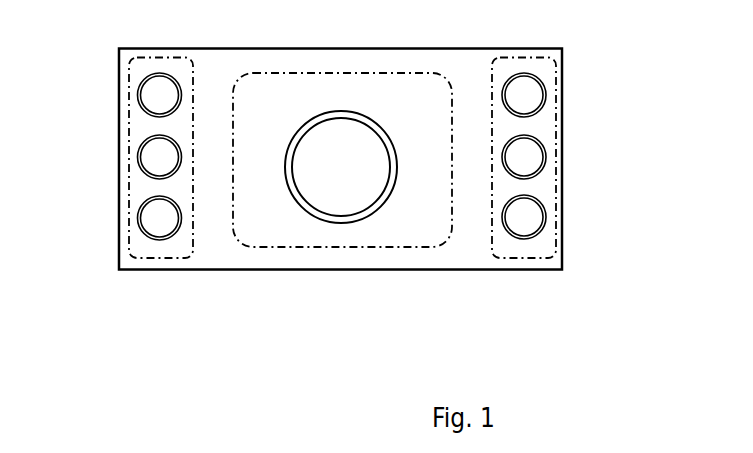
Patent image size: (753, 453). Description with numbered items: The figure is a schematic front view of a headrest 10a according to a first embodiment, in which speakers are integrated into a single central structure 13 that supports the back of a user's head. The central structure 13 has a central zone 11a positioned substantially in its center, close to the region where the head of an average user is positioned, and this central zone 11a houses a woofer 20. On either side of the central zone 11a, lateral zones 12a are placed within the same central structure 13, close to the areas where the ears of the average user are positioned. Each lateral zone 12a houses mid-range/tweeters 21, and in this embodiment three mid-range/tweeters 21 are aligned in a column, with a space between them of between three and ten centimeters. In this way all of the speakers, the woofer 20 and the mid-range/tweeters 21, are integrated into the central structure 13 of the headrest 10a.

The headrest 10a is at (78, 338).
The central zone 11a is at (387, 248).
The lateral zone 12a is at (134, 258).
The central structure 13 is at (563, 200).
The woofer 20 is at (347, 188).
The mid-range/tweeter 21 is at (141, 163).